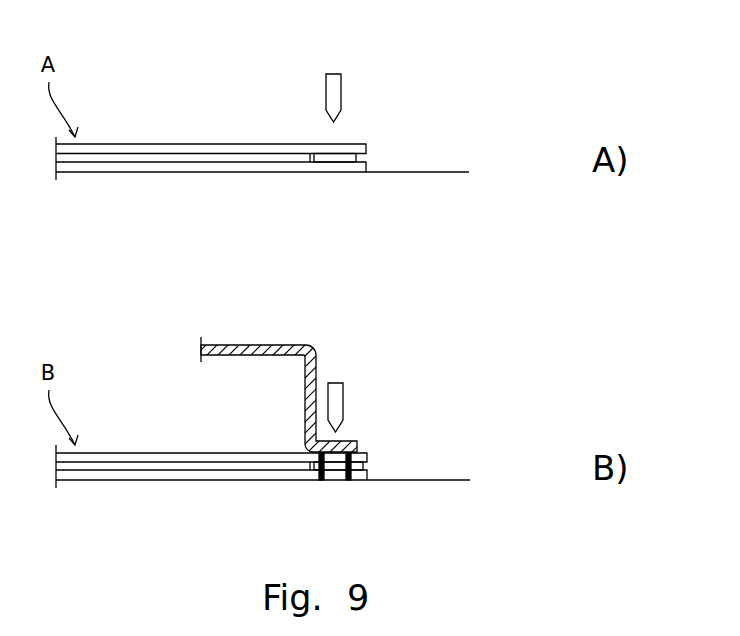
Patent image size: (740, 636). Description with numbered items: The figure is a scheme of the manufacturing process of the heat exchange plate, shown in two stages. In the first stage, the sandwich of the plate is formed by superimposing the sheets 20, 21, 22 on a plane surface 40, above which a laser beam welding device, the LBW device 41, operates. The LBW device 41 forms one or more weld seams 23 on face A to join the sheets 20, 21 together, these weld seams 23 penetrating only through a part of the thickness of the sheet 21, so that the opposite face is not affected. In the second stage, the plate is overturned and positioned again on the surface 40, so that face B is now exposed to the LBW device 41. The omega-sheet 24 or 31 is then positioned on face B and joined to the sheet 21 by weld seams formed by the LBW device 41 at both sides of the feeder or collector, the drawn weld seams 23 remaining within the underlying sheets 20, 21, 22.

The sheet 20 is at (158, 150).
The sheet 21 is at (158, 168).
The sheet 22 is at (318, 156).
The weld seams 23 is at (320, 482).
The omega-sheet 24 is at (235, 345).
The omega-sheet 31 is at (277, 386).
The plane surface 40 is at (433, 170).
The LBW device 41 is at (333, 88).